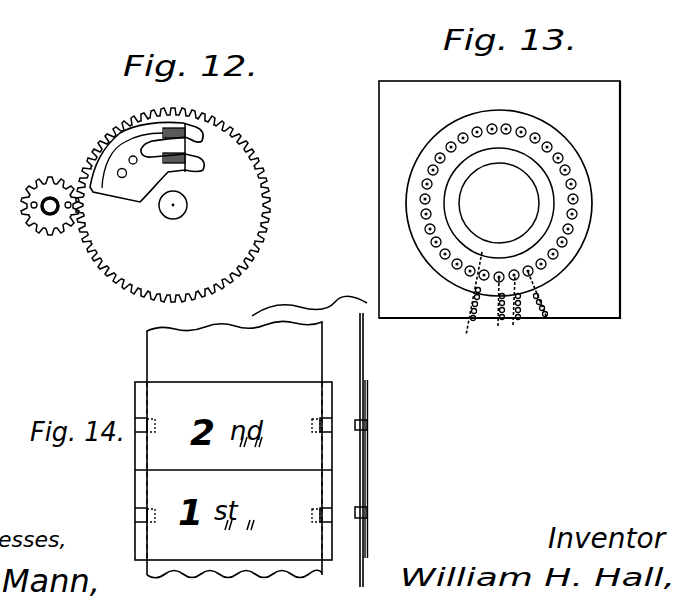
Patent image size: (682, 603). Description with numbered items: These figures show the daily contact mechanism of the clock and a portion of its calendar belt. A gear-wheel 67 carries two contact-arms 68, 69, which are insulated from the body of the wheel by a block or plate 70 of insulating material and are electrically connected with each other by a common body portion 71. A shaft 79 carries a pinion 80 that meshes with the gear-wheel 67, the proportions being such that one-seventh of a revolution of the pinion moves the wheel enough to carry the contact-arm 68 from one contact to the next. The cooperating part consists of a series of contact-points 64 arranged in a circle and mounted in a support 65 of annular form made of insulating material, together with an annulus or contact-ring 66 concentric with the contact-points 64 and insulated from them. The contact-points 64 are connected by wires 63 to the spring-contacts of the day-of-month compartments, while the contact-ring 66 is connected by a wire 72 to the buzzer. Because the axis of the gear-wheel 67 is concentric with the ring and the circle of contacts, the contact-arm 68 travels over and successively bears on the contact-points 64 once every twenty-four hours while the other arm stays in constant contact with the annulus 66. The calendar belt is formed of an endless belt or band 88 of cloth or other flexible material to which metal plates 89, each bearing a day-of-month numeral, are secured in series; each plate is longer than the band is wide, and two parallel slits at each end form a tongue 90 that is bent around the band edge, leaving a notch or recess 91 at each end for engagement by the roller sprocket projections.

In FIG. 12, the gear-wheel 67 is at (173, 205).
In FIG. 12, the contact-arm 68 is at (199, 137).
In FIG. 12, the contact-arm 69 is at (203, 165).
In FIG. 12, the block or plate of insulating material 70 is at (130, 195).
In FIG. 12, the common body portion 71 is at (118, 148).
In FIG. 12, the shaft 79 is at (50, 198).
In FIG. 12, the pinion 80 is at (49, 233).
In FIG. 13, the wires 63 is at (522, 320).
In FIG. 13, the contact-points 64 is at (489, 125).
In FIG. 13, the support 65 is at (583, 228).
In FIG. 13, the annulus or contact-ring 66 is at (457, 219).
In FIG. 13, the wire 72 is at (468, 322).
In FIG. 14, the endless belt or band 88 is at (191, 338).
In FIG. 14, the metal plates 89 is at (292, 390).
In FIG. 14, the tongue 90 is at (332, 426).
In FIG. 14, the notch or recess 91 is at (369, 431).